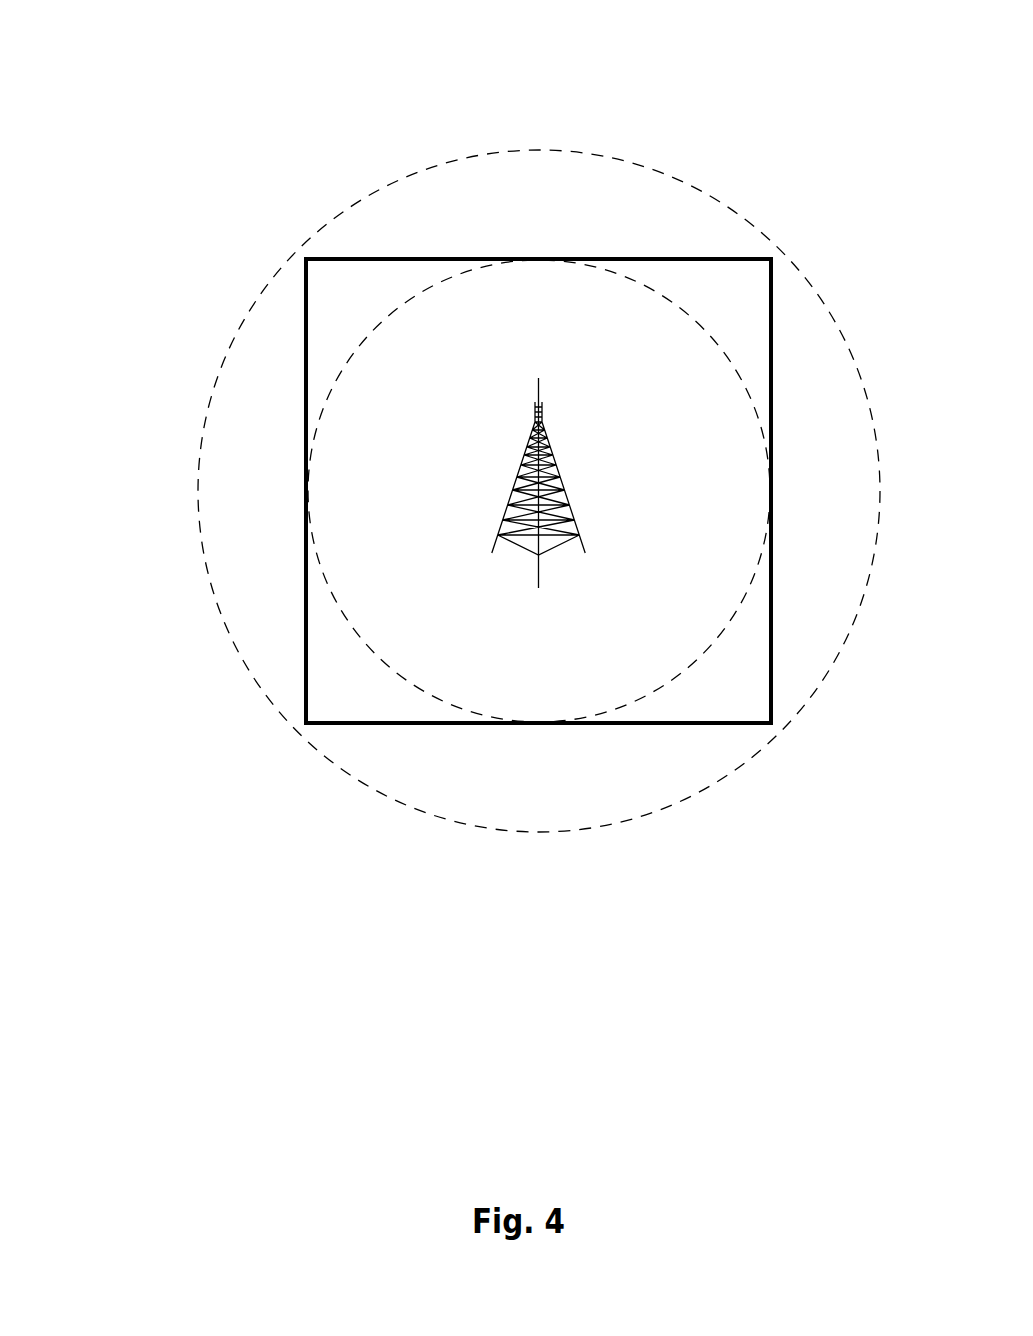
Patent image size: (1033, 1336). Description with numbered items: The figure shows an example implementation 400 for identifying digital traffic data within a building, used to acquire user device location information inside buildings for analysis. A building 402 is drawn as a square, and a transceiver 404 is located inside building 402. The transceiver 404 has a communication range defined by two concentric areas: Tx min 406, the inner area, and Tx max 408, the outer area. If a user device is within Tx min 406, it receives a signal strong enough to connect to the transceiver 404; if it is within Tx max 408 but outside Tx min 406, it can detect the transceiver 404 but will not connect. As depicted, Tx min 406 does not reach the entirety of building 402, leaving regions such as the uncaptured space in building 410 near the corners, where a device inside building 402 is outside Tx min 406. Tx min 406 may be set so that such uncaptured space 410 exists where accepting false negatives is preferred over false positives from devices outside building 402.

The implementation 400 is at (112, 66).
The building 402 is at (779, 714).
The transceiver 404 is at (542, 570).
The Tx min 406 is at (390, 315).
The Tx max 408 is at (567, 840).
The uncaptured space in building 410 is at (322, 290).